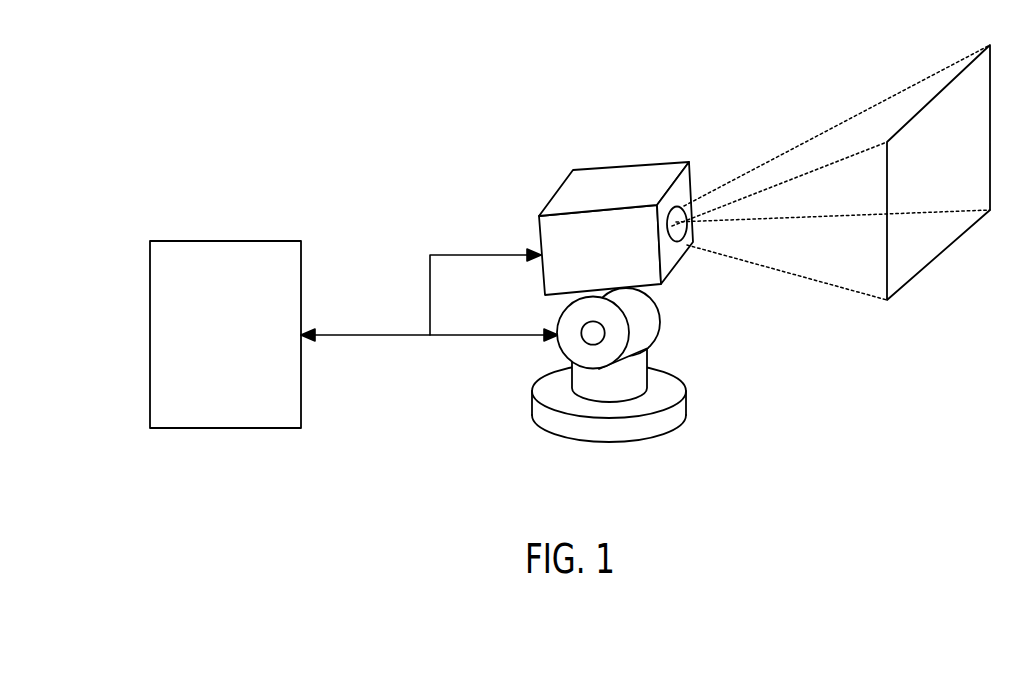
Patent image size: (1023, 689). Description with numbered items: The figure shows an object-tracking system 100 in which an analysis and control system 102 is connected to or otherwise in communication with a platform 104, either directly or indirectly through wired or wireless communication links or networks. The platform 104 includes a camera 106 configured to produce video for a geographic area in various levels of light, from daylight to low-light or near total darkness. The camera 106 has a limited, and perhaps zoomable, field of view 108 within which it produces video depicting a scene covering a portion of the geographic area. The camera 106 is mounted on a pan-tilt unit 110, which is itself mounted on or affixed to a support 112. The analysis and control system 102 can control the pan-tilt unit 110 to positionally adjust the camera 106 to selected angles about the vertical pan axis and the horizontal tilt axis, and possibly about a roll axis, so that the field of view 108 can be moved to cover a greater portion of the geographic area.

The object-tracking system 100 is at (497, 31).
The analysis and control system 102 is at (225, 319).
The platform 104 is at (580, 302).
The camera 106 is at (616, 215).
The field of view 108 is at (831, 172).
The pan-tilt unit 110 is at (637, 345).
The support 112 is at (607, 416).